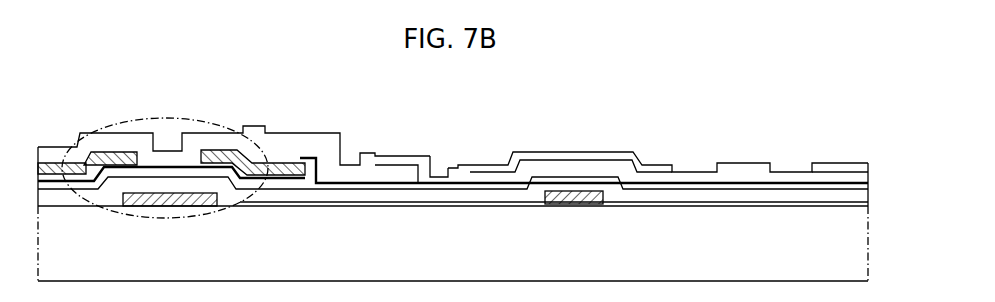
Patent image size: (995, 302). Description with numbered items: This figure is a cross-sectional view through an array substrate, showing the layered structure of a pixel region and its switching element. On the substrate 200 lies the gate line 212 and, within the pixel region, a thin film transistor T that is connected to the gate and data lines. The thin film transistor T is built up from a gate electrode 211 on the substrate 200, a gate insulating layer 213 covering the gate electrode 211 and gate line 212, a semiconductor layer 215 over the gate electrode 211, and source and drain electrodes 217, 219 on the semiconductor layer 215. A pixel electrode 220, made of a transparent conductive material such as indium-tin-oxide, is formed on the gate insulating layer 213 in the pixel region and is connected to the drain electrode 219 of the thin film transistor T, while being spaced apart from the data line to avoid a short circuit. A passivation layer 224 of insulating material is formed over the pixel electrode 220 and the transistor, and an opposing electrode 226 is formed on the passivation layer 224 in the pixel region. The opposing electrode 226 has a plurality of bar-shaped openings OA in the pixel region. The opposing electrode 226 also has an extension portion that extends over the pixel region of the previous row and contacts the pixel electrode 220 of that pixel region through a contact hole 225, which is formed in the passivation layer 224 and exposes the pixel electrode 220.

The substrate 200 is at (822, 271).
The gate electrode 211 is at (160, 202).
The gate line 212 is at (576, 204).
The gate insulating layer 213 is at (320, 203).
The semiconductor layer 215 is at (70, 176).
The source electrode 217 is at (121, 151).
The drain electrode 219 is at (216, 150).
The pixel electrode 220 is at (421, 188).
The passivation layer 224 is at (390, 172).
The contact hole 225 is at (440, 160).
The opposing electrode 226 is at (304, 133).
The bar-shaped opening OA is at (793, 165).
The thin film transistor T is at (226, 219).